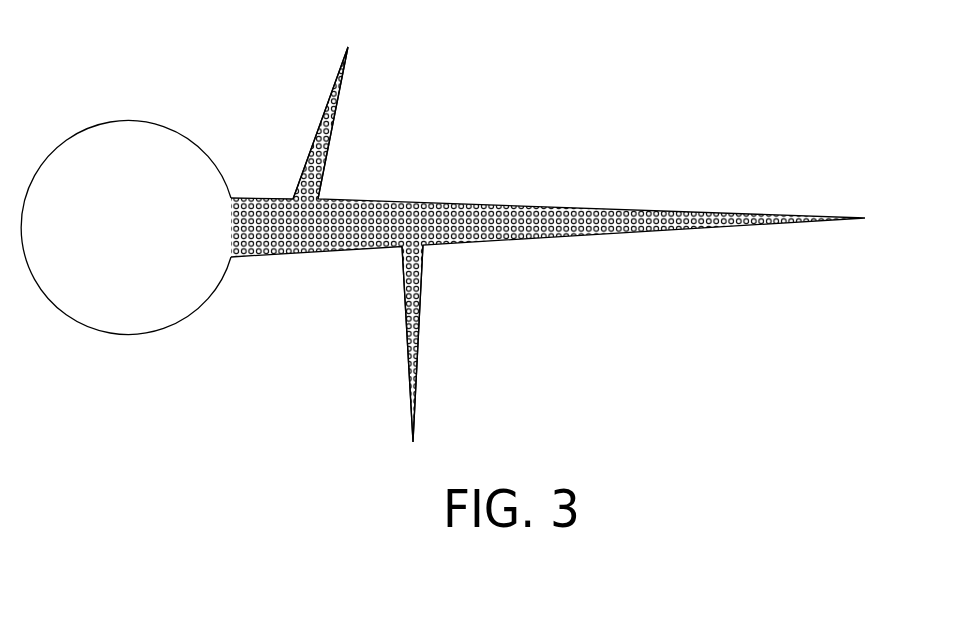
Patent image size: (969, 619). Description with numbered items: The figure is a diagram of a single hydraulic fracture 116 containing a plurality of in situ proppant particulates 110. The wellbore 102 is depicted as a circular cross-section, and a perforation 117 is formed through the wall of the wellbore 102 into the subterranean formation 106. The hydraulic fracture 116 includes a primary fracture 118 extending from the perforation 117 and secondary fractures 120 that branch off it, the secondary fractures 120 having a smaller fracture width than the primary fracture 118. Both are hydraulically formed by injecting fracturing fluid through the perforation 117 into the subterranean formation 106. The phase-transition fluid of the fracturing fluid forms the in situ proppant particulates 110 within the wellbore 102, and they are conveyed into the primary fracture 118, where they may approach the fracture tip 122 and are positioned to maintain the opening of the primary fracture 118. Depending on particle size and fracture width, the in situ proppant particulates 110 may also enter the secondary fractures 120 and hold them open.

The wellbore 102 is at (130, 122).
The subterranean formation 106 is at (585, 299).
The in situ proppant particulates 110 is at (312, 147).
The hydraulic fracture 116 is at (754, 45).
The perforation 117 is at (213, 238).
The primary fracture 118 is at (578, 205).
The secondary fractures 120 is at (337, 80).
The fracture tip 122 is at (840, 223).